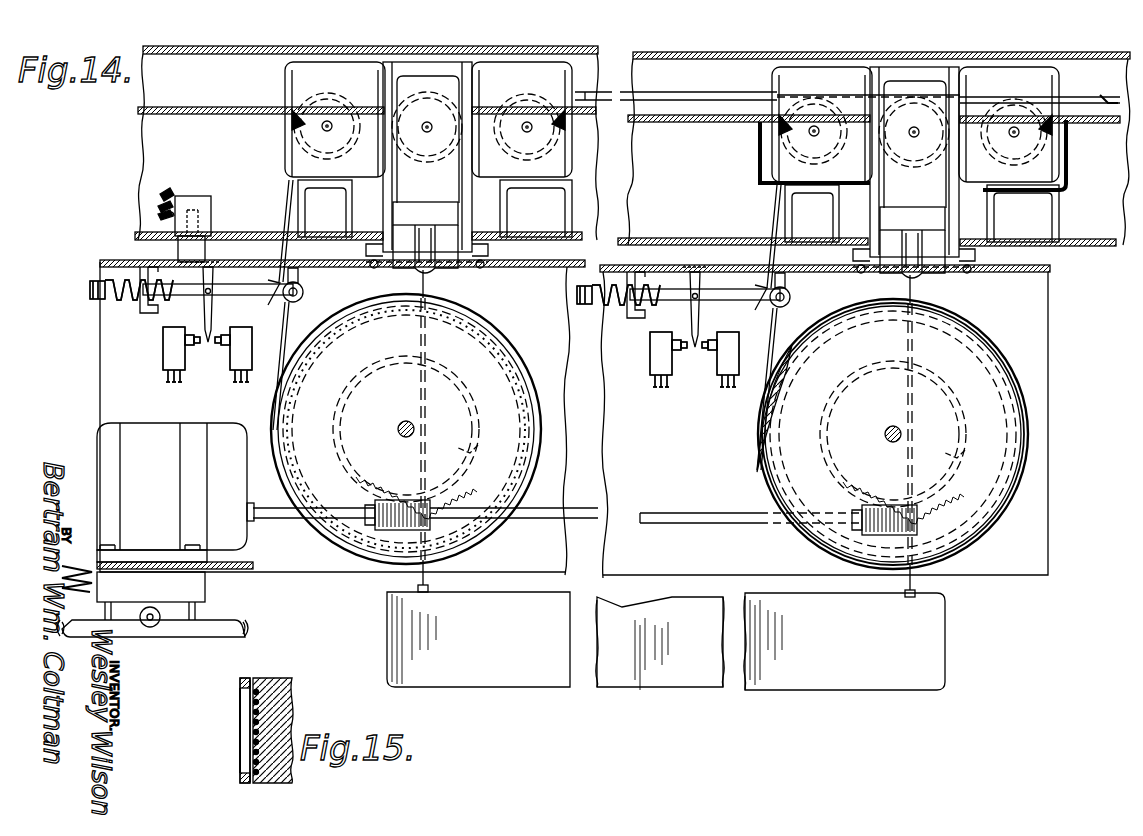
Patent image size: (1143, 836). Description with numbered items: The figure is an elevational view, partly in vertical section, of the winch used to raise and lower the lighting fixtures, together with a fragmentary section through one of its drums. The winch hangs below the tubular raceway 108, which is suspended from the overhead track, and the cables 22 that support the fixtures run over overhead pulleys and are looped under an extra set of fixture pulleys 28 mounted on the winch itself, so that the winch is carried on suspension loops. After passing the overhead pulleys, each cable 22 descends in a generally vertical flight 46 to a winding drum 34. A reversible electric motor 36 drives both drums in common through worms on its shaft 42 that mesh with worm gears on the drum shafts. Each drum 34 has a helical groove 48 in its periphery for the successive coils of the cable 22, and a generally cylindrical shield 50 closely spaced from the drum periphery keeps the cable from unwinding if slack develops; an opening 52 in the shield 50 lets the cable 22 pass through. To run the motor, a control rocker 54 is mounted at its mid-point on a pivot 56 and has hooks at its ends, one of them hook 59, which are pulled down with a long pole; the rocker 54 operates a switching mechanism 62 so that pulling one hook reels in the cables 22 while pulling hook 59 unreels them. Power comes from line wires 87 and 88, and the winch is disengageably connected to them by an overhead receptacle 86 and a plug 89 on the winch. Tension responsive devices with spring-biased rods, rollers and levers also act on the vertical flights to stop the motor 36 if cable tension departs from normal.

In FIG. 14, the cable 22 is at (1108, 96).
In FIG. 15, the cable 22 is at (252, 724).
In FIG. 14, the fixture pulley 28 is at (900, 168).
In FIG. 15, the winding drum 34 is at (276, 682).
In FIG. 14, the electric motor 36 is at (150, 437).
In FIG. 14, the motor shaft 42 is at (702, 524).
In FIG. 14, the vertical flight 46 is at (775, 262).
In FIG. 14, the helical groove 48 is at (316, 358).
In FIG. 15, the helical groove 48 is at (253, 752).
In FIG. 14, the shield 50 is at (982, 532).
In FIG. 15, the shield 50 is at (244, 684).
In FIG. 14, the opening 52 is at (762, 418).
In FIG. 15, the opening 52 is at (234, 701).
In FIG. 14, the control rocker 54 is at (130, 637).
In FIG. 14, the pivot 56 is at (152, 627).
In FIG. 14, the hook 59 is at (246, 631).
In FIG. 14, the switching mechanism 62 is at (207, 592).
In FIG. 14, the receptacle 86 is at (205, 213).
In FIG. 14, the line wire 87 is at (168, 196).
In FIG. 14, the line wire 88 is at (160, 209).
In FIG. 14, the plug 89 is at (200, 250).
In FIG. 14, the tubular raceway 108 is at (134, 160).